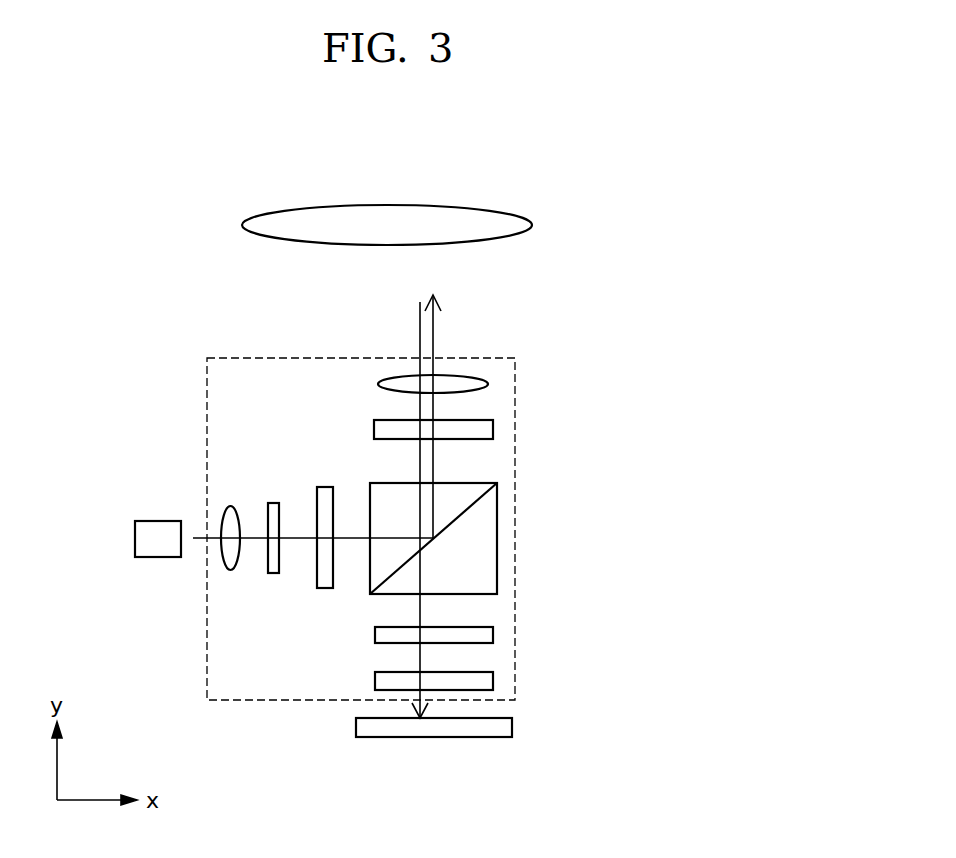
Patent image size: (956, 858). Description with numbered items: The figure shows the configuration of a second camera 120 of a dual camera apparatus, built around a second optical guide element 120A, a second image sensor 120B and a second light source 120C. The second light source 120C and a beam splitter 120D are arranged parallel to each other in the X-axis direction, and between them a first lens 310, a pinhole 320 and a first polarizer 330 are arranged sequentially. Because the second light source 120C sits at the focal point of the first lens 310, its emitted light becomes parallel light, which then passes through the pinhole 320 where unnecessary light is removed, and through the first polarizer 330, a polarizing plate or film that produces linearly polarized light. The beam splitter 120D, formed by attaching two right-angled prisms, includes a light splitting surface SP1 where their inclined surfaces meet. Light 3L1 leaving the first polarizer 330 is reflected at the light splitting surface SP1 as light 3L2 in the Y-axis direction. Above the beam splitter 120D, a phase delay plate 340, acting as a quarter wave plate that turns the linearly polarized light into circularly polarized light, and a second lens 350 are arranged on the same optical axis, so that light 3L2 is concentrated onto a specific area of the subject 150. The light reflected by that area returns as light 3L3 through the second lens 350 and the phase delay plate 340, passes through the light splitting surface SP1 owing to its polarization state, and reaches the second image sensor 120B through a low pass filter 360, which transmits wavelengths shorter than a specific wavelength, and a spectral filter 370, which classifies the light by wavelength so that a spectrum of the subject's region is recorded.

The subject 150 is at (467, 207).
The second camera 120 is at (606, 348).
The second optical guide element 120A is at (468, 357).
The second image sensor 120B is at (512, 727).
The second light source 120C is at (159, 520).
The beam splitter 120D is at (497, 538).
The first lens 310 is at (222, 555).
The pinhole 320 is at (267, 577).
The first polarizer 330 is at (318, 590).
The phase delay plate 340 is at (493, 429).
The second lens 350 is at (488, 384).
The low pass filter 360 is at (493, 635).
The spectral filter 370 is at (493, 680).
The light passing through the first polarizer 3L1 is at (355, 538).
The light reflected at the light splitting surface 3L2 is at (434, 467).
The light reflected by the subject 3L3 is at (420, 610).
The light splitting surface SP1 is at (375, 558).